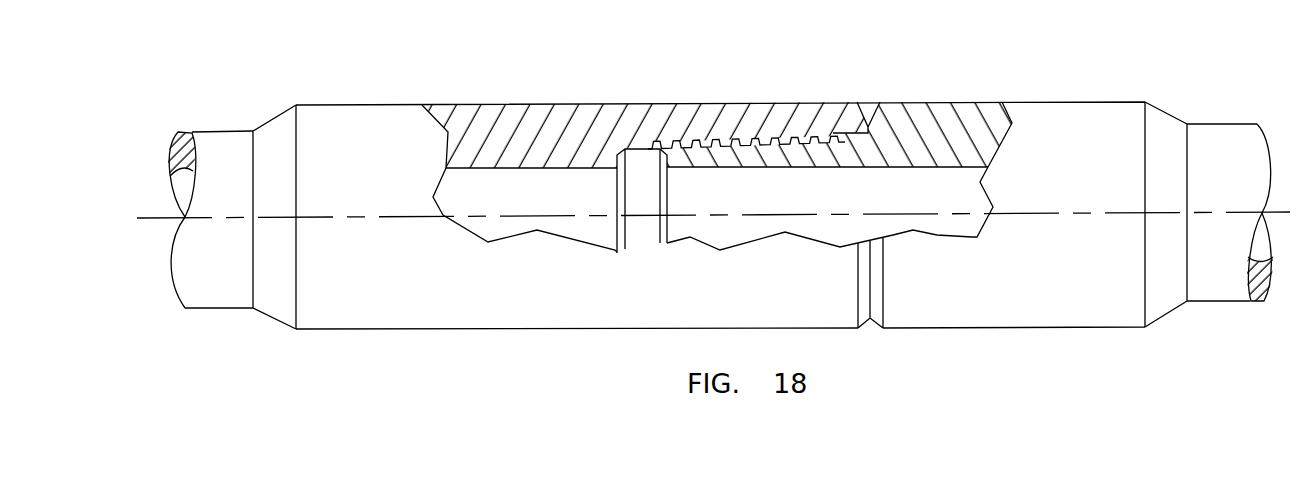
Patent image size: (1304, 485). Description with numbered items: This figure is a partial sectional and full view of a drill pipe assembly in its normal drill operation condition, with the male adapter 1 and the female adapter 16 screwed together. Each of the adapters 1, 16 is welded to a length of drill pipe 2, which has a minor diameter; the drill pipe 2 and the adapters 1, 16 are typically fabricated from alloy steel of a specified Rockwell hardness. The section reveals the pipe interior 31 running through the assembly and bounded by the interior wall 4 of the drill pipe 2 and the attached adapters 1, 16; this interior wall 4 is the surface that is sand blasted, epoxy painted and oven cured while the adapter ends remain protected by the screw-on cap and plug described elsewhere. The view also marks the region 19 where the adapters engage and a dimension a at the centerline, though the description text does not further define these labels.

The male adapter 1 is at (962, 99).
The drill pipe 2 is at (222, 131).
The interior wall 4 is at (182, 183).
The female adapter 16 is at (580, 103).
The threaded portion 19 is at (895, 80).
The pipe interior 31 is at (552, 205).
The gap a is at (346, 218).